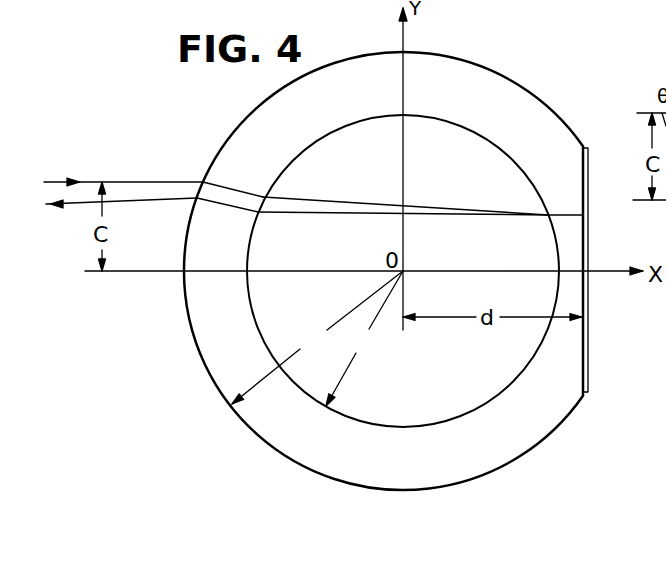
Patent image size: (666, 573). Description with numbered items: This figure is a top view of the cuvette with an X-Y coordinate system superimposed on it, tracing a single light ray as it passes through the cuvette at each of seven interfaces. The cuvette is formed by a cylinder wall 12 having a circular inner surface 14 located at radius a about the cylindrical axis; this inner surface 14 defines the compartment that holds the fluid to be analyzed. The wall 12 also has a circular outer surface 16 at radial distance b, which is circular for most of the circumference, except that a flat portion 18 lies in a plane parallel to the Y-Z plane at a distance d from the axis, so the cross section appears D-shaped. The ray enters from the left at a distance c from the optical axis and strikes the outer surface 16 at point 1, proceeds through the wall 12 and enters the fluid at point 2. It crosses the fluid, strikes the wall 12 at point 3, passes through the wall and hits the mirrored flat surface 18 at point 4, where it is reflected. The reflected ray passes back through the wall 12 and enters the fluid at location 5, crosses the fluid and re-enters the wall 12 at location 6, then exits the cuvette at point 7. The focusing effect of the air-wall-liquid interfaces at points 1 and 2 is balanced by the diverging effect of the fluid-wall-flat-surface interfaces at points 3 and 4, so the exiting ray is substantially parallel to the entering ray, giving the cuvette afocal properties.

The point 1 is at (203, 182).
The point 2 is at (263, 197).
The point 3 is at (548, 214).
The point 4 is at (584, 214).
The location 5 is at (548, 216).
The location 6 is at (258, 212).
The point 7 is at (197, 198).
The cylinder wall 12 is at (300, 447).
The inner surface 14 is at (433, 421).
The outer surface 16 is at (202, 354).
The flat portion 18 is at (588, 348).